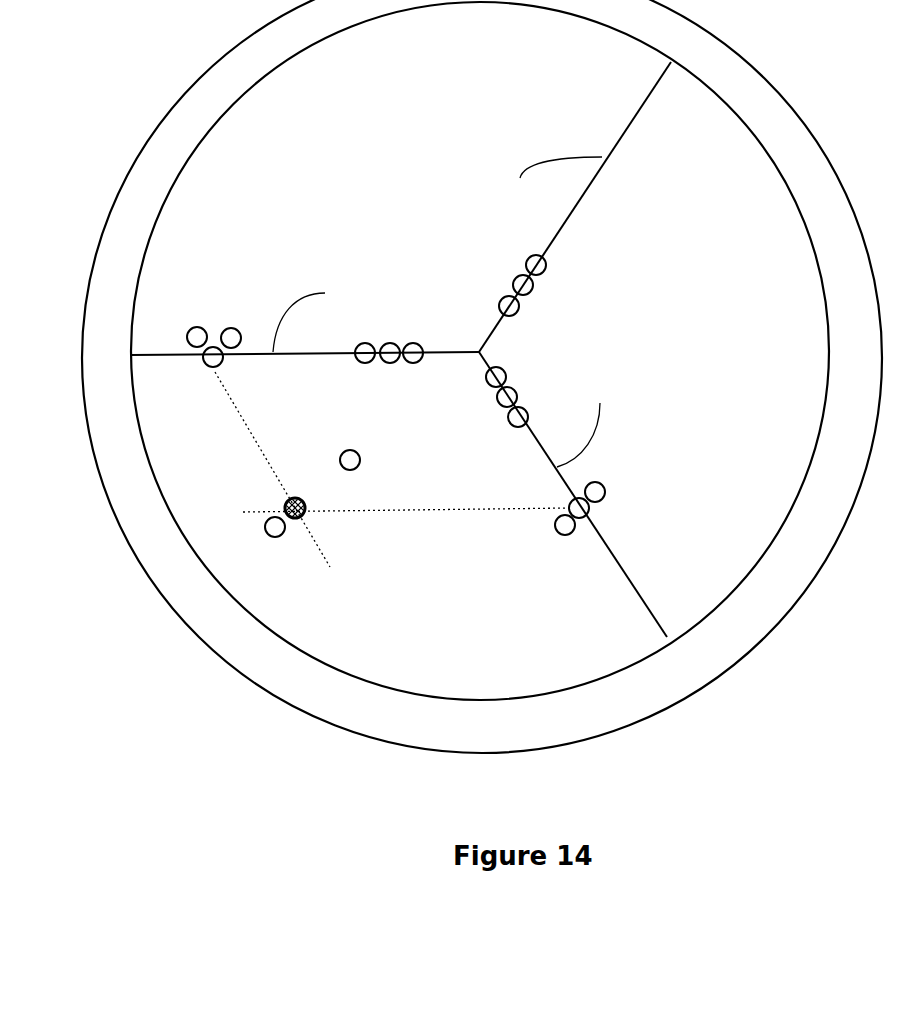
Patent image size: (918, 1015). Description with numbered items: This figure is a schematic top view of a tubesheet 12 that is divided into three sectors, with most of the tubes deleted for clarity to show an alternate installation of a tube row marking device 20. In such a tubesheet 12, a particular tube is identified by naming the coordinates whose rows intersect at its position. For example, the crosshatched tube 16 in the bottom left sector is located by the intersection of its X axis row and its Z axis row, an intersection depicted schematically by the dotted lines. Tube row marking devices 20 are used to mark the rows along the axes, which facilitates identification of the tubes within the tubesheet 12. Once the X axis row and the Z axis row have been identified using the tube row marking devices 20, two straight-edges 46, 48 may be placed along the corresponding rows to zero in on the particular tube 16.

The tubesheet 12 is at (293, 592).
The crosshatched tube 16 is at (287, 503).
The tube row marking device 20 is at (155, 352).
The straight-edge 46 is at (253, 432).
The straight-edge 48 is at (437, 512).